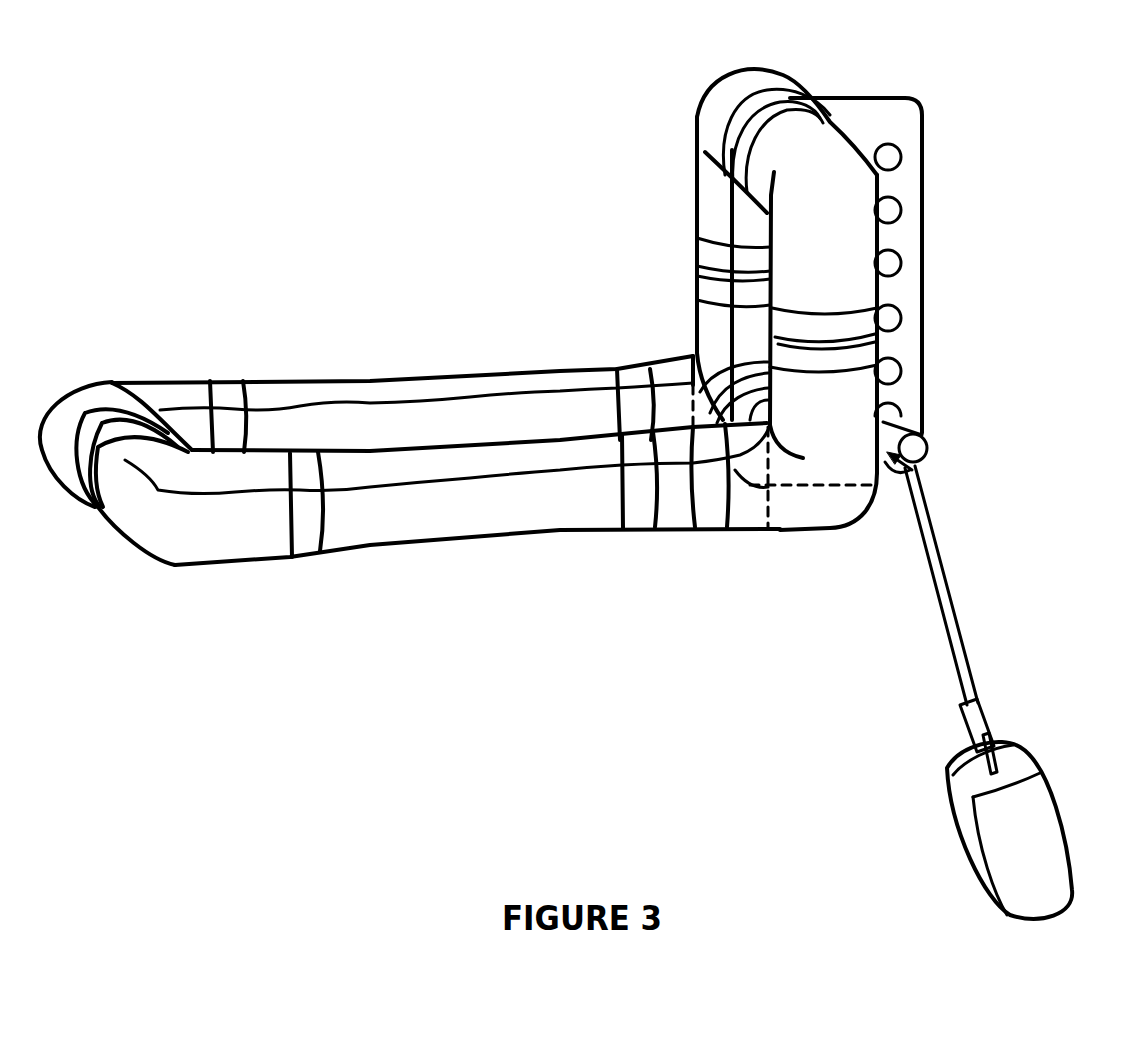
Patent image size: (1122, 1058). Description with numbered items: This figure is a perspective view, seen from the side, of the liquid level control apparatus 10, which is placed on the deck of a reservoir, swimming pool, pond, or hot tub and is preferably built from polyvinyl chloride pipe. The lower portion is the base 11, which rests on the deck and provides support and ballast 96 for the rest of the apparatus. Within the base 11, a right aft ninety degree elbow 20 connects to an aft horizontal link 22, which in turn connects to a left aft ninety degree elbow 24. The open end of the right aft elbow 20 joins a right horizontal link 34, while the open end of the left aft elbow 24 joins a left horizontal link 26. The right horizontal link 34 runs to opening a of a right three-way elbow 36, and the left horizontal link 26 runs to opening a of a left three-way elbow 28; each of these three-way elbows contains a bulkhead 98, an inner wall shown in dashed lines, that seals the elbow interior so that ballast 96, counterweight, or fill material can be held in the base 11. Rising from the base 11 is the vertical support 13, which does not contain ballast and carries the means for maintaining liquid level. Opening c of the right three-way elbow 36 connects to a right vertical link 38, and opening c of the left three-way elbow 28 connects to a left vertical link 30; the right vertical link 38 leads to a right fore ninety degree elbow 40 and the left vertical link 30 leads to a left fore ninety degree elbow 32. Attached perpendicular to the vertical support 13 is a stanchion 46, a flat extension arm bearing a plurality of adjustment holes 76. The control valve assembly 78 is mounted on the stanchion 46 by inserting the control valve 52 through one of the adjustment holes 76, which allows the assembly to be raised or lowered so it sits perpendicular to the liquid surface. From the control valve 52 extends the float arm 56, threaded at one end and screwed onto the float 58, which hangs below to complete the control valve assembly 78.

The liquid level control apparatus 10 is at (476, 666).
The base 11 is at (352, 600).
The vertical support 13 is at (898, 583).
The right aft 90 degree elbow 20 is at (215, 563).
The aft horizontal link 22 is at (93, 507).
The left aft 90 degree elbow 24 is at (152, 381).
The left horizontal link 26 is at (413, 378).
The left 3-way elbow 28 is at (620, 353).
The left vertical link 30 is at (705, 268).
The left fore 90 degree elbow 32 is at (718, 85).
The right horizontal link 34 is at (485, 537).
The right 3-way elbow 36 is at (838, 523).
The right vertical link 38 is at (882, 336).
The right fore 90 degree elbow 40 is at (832, 98).
The stanchion 46 is at (922, 200).
The control valve 52 is at (925, 438).
The float arm 56 is at (950, 605).
The float 58 is at (953, 823).
The adjustment holes 76 is at (889, 144).
The control valve assembly 78 is at (968, 497).
The ballast 96 is at (623, 528).
The bulkhead 98 is at (692, 377).